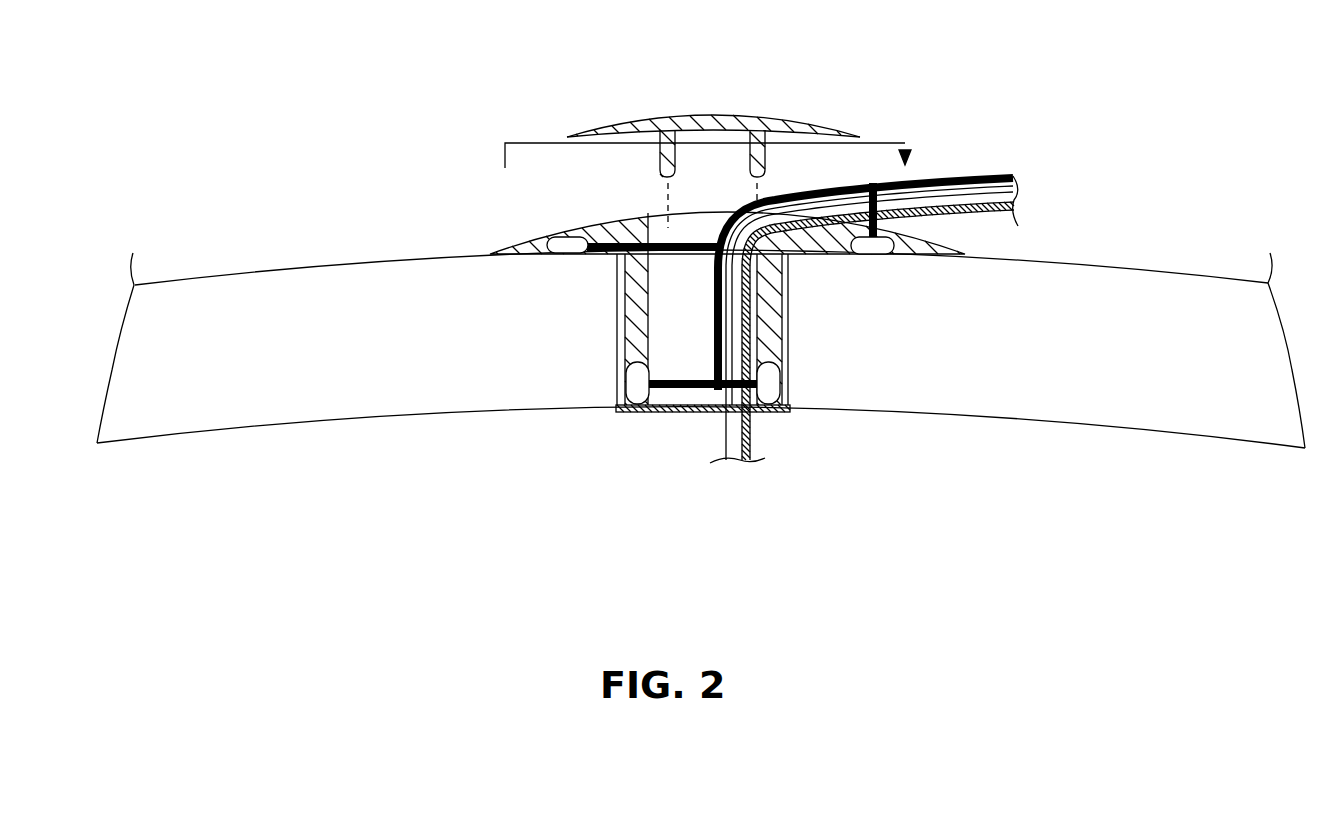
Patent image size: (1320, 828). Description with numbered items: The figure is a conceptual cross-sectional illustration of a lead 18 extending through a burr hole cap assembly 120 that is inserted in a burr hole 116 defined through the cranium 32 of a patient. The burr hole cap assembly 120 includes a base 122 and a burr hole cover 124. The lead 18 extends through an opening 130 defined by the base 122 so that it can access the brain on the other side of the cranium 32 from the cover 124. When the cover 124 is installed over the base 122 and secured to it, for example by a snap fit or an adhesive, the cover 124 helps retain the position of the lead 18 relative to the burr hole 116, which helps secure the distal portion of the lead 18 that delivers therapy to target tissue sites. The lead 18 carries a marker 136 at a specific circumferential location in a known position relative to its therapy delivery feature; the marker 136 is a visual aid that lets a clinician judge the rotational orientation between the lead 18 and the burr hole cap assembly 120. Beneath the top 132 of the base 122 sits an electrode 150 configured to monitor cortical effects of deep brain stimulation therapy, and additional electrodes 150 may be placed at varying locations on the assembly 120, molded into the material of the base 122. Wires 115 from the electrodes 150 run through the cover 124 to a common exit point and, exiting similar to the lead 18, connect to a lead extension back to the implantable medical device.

The lead 18 is at (897, 172).
The cranium 32 is at (372, 375).
The wires 115 is at (705, 355).
The burr hole 116 is at (600, 387).
The burr hole cap assembly 120 is at (868, 97).
The base 122 is at (797, 343).
The burr hole cover 124 is at (697, 117).
The opening 130 is at (680, 293).
The top 132 is at (540, 230).
The marker 136 is at (966, 205).
The electrode 150 is at (626, 378).